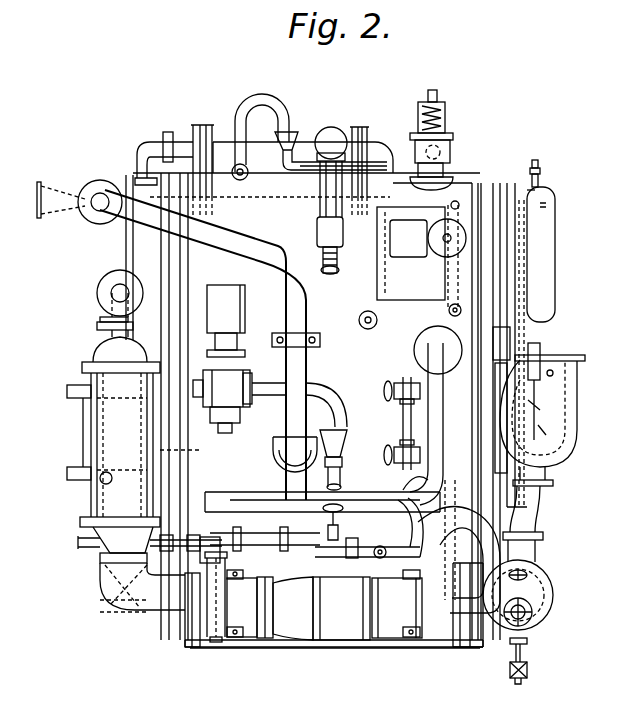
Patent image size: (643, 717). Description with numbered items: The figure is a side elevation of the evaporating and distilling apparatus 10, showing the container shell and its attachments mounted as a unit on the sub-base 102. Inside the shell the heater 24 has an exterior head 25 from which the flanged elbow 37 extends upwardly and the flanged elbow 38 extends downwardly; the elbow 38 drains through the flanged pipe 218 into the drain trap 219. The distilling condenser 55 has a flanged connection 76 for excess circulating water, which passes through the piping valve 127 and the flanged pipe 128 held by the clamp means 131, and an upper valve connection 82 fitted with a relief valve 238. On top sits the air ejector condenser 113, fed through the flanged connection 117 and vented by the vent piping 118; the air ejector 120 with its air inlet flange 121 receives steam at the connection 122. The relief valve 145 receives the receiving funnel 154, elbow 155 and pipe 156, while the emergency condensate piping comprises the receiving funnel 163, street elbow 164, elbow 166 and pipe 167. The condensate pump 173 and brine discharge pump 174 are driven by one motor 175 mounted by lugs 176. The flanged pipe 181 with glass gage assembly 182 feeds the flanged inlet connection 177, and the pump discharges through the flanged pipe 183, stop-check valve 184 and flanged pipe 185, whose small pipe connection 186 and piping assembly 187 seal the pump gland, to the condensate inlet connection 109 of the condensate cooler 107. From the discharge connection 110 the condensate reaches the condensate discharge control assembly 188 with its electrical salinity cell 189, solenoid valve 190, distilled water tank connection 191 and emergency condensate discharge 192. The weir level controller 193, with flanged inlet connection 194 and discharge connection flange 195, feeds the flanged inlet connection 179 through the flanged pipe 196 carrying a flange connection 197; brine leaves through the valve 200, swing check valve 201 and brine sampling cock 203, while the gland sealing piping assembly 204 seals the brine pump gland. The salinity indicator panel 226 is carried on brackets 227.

The evaporating and distilling apparatus 10 is at (319, 692).
The heater 24 is at (555, 462).
The exterior head 25 is at (503, 380).
The flanged elbow 37 is at (572, 380).
The flanged elbow 38 is at (553, 465).
The distilling condenser 55 is at (545, 268).
The flanged connection 76 is at (130, 181).
The upper valve connection 82 is at (542, 187).
The sub-base 102 is at (383, 648).
The condensate cooler 107 is at (92, 442).
The condensate inlet connection 109 is at (148, 490).
The discharge connection 110 is at (150, 400).
The air ejector condenser 113 is at (220, 140).
The flanged connection 117 is at (320, 127).
The vent piping 118 is at (262, 96).
The air ejector 120 is at (318, 230).
The air inlet flange 121 is at (345, 266).
The connection 122 is at (336, 258).
The piping valve 127 is at (62, 185).
The flanged pipe 128 is at (148, 225).
The clamp means 131 is at (313, 340).
The relief valve 145 is at (450, 136).
The receiving funnel 154 is at (283, 132).
The elbow 155 is at (297, 172).
The pipe 156 is at (325, 190).
The receiving funnel 163 is at (325, 437).
The street elbow 164 is at (328, 484).
The elbow 166 is at (347, 470).
The pipe 167 is at (443, 474).
The condensate pump 173 is at (447, 640).
The brine discharge pump 174 is at (216, 642).
The motor 175 is at (340, 634).
The lugs 176 is at (238, 637).
The flanged inlet connection 177 is at (460, 633).
The flanged inlet connection 179 is at (190, 638).
The flanged pipe 181 is at (438, 433).
The glass gage assembly 182 is at (405, 410).
The flanged pipe 183 is at (425, 504).
The stop-check valve 184 is at (406, 442).
The flanged pipe 185 is at (232, 500).
The small pipe connection 186 is at (341, 608).
The piping assembly 187 is at (364, 556).
The condensate discharge control assembly 188 is at (242, 380).
The electrical salinity cell 189 is at (246, 352).
The solenoid valve 190 is at (238, 313).
The distilled water tank connection 191 is at (222, 426).
The emergency condensate discharge 192 is at (268, 396).
The weir level controller 193 is at (85, 422).
The flanged inlet connection 194 is at (170, 455).
The discharge connection flange 195 is at (78, 540).
The flanged pipe 196 is at (103, 578).
The flange connection 197 is at (147, 572).
The valve 200 is at (226, 486).
The swing check valve 201 is at (272, 542).
The brine sampling cock 203 is at (330, 545).
The gland sealing piping assembly 204 is at (180, 548).
The flanged pipe 218 is at (533, 508).
The drain trap 219 is at (545, 570).
The salinity indicator panel 226 is at (378, 282).
The brackets 227 is at (450, 310).
The relief valve 238 is at (541, 168).